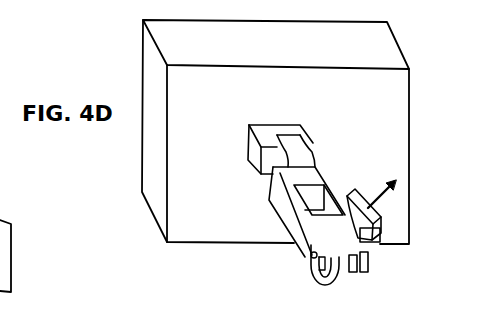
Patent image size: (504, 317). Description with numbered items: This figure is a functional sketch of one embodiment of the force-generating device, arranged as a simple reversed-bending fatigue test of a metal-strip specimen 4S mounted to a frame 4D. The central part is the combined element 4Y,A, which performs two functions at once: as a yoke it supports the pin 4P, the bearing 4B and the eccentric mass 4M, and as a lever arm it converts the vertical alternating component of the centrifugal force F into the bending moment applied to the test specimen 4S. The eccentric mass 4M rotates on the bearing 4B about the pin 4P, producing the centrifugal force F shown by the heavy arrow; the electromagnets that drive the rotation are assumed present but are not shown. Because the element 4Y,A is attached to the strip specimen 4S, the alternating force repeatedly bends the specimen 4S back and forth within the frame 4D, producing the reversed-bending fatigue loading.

The frame 4D is at (275, 132).
The metal-strip specimen 4S is at (299, 150).
The yoke and lever arm element 4Y,A is at (272, 212).
The eccentric mass 4M is at (382, 217).
The centrifugal force F is at (385, 180).
The bearing 4B is at (317, 289).
The pin 4P is at (350, 272).